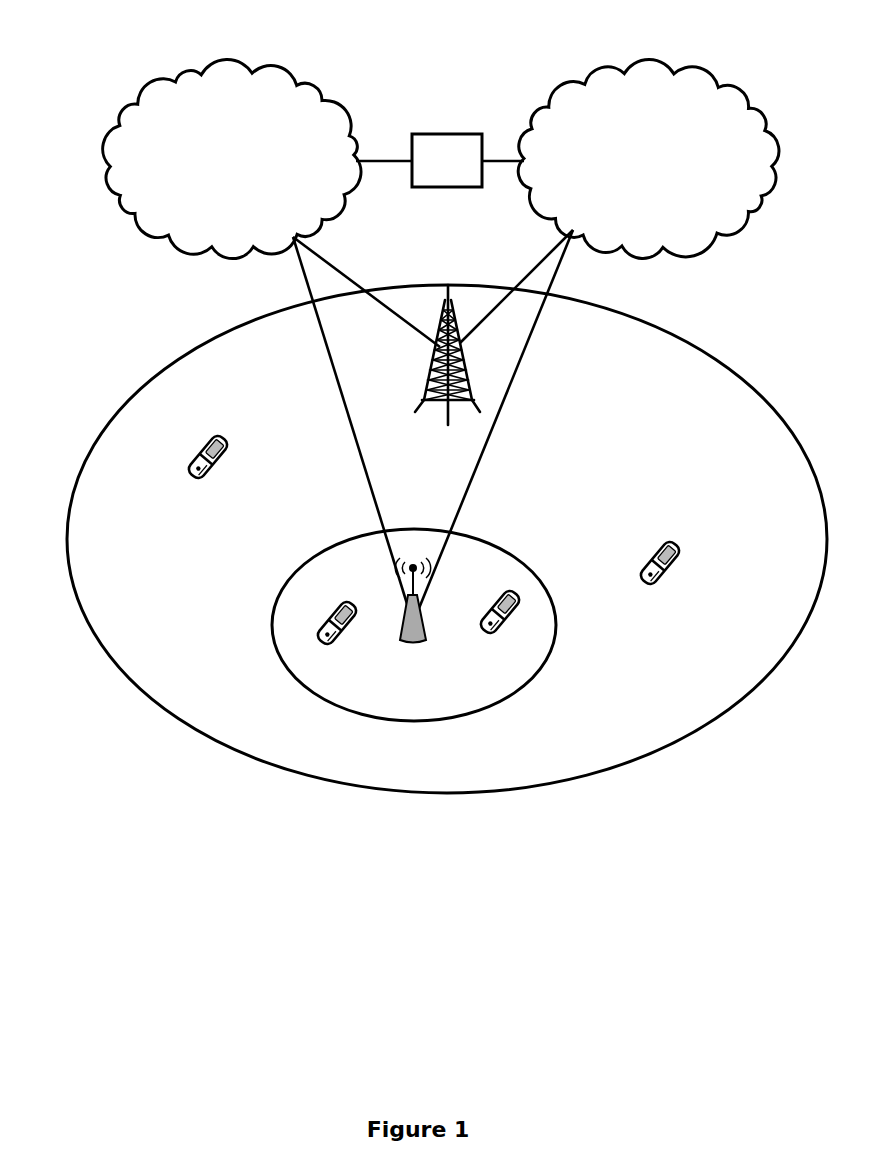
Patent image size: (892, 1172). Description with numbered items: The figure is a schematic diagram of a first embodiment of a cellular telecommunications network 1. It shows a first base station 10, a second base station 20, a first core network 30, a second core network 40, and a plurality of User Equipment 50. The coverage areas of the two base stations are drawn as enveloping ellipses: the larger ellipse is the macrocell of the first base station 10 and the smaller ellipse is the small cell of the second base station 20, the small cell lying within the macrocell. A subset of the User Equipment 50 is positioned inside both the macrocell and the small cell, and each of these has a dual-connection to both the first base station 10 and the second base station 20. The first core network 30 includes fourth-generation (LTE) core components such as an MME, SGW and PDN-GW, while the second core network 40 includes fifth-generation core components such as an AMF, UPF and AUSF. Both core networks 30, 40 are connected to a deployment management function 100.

The cellular telecommunications network 1 is at (104, 46).
The first base station 10 is at (433, 356).
The second base station 20 is at (414, 644).
The first core network 30 is at (108, 162).
The second core network 40 is at (560, 95).
The User Equipment 50 is at (202, 449).
The deployment management function 100 is at (447, 160).